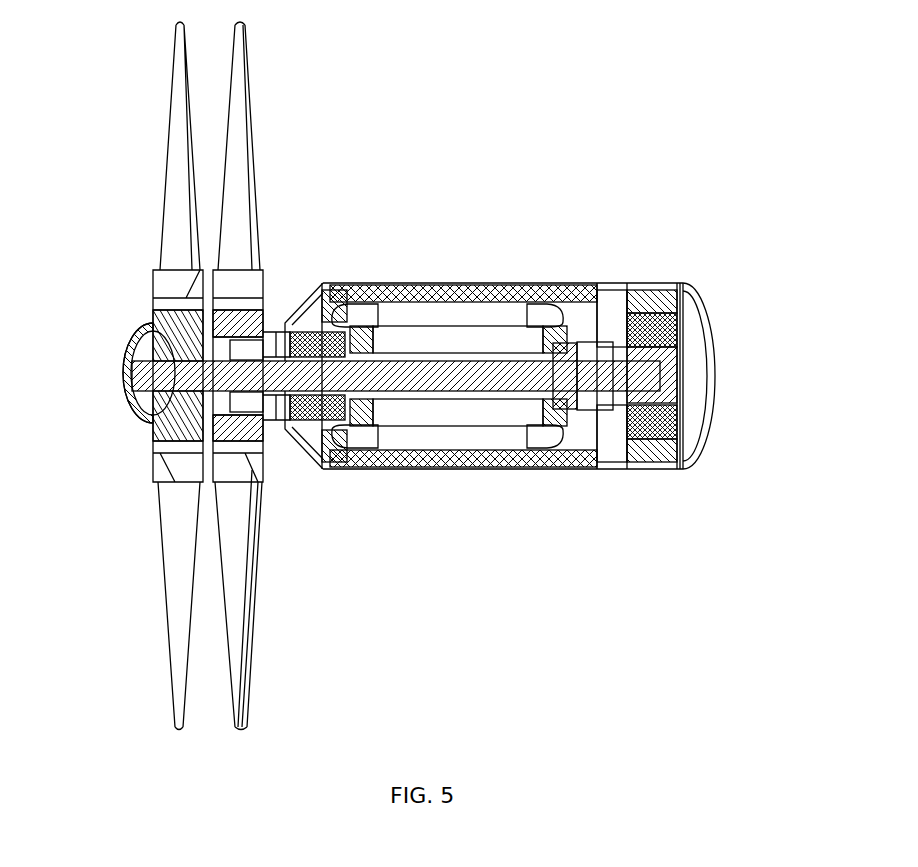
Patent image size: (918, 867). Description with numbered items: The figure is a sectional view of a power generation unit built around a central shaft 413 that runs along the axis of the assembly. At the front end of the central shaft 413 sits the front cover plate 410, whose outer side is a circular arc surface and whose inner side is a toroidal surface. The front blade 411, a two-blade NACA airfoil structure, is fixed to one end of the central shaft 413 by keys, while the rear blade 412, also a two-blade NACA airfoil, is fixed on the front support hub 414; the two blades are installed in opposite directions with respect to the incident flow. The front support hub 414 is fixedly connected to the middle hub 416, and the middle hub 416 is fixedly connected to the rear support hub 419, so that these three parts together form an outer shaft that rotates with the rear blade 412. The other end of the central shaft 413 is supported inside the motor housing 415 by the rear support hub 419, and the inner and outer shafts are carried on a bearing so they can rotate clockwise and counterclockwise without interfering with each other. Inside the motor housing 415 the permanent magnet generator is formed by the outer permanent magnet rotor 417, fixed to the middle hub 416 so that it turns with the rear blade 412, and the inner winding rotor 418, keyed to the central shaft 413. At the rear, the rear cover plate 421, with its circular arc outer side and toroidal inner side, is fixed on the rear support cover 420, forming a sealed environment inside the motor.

The front cover plate 410 is at (122, 362).
The front blade 411 is at (170, 248).
The rear blade 412 is at (240, 227).
The central shaft 413 is at (326, 287).
The front support hub 414 is at (353, 300).
The motor housing 415 is at (423, 290).
The middle hub 416 is at (474, 288).
The outer permanent magnet rotor 417 is at (486, 328).
The inner winding rotor 418 is at (538, 305).
The rear support hub 419 is at (654, 290).
The rear support cover 420 is at (690, 318).
The rear cover plate 421 is at (723, 360).